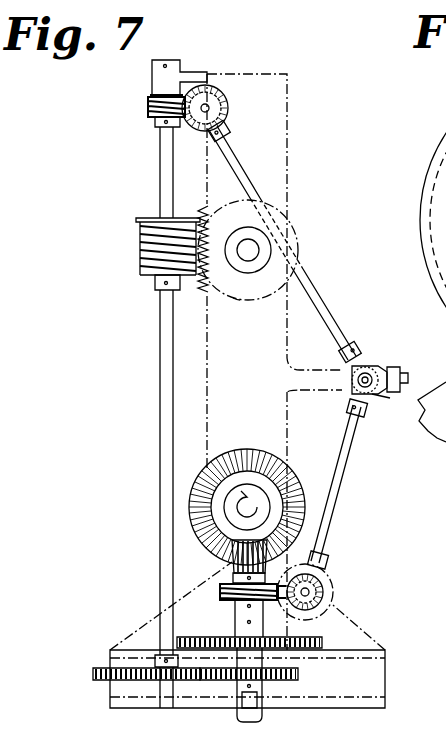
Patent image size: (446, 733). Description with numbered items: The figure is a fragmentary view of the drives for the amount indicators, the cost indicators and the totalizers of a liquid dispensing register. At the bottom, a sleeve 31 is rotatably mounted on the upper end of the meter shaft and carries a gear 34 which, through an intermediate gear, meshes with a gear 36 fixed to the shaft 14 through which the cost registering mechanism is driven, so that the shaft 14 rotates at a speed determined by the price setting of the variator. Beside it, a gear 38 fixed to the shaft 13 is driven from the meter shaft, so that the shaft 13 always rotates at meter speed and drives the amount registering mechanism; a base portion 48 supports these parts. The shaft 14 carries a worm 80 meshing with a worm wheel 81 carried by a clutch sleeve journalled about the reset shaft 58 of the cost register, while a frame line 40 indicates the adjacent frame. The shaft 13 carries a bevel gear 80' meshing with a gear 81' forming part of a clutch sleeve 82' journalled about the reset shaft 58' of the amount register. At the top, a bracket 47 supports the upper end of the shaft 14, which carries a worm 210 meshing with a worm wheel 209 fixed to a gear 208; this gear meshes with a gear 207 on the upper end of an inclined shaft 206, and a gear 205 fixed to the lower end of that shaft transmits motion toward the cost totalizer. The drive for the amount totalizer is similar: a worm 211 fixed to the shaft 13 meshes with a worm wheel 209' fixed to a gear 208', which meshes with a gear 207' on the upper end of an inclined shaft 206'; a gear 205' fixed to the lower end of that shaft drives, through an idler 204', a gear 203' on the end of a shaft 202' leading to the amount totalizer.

The bracket 47 is at (207, 72).
The worm wheel 209 is at (142, 87).
The worm 210 is at (150, 108).
The gear 208 is at (235, 108).
The gear 207 is at (247, 126).
The inclined shaft 206 is at (282, 243).
The worm 80 is at (149, 254).
The reset shaft 58 is at (248, 250).
The worm wheel 81 is at (237, 318).
The shaft 14 is at (160, 367).
The frame line 40 is at (207, 398).
The gear 205 is at (364, 340).
The idler 204' is at (386, 364).
The shaft 202' is at (416, 371).
The gear 203' is at (397, 412).
The gear 205' is at (374, 422).
The inclined shaft 206' is at (351, 484).
The reset shaft 58' is at (247, 498).
The gear 81' is at (310, 450).
The clutch sleeve 82' is at (173, 515).
The bevel gear 80' is at (183, 566).
The gear 207' is at (343, 561).
The gear 208' is at (330, 592).
The worm wheel 209' is at (329, 601).
The worm 211 is at (222, 598).
The shaft 13 is at (235, 623).
The gear 38 is at (322, 644).
The gear 36 is at (93, 674).
The gear 34 is at (298, 675).
The base 48 is at (378, 688).
The sleeve 31 is at (258, 718).